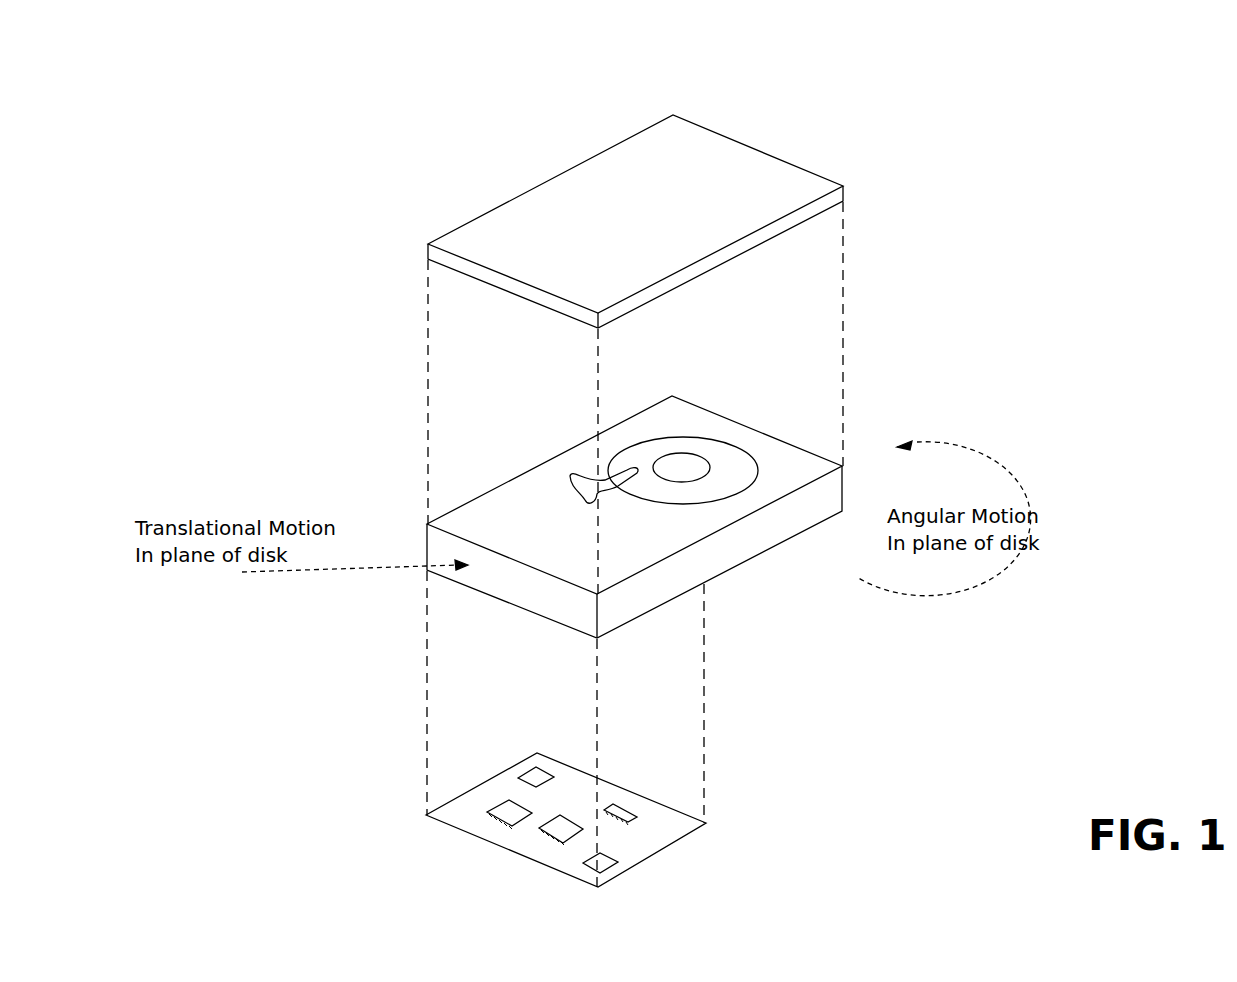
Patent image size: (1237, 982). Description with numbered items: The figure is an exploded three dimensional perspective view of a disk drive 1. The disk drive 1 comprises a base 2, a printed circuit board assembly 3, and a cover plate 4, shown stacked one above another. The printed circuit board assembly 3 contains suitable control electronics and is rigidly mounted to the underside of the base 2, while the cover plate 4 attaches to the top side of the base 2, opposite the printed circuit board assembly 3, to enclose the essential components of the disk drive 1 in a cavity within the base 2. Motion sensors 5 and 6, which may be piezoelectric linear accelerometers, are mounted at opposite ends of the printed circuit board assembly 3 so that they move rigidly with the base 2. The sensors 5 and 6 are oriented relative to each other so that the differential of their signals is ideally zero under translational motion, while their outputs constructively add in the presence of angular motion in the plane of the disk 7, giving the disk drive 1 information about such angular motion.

The disk drive 1 is at (1102, 177).
The base 2 is at (797, 446).
The printed circuit board assembly 3 is at (662, 807).
The cover plate 4 is at (787, 162).
The motion sensor 5 is at (537, 770).
The motion sensor 6 is at (602, 853).
The disk 7 is at (683, 437).